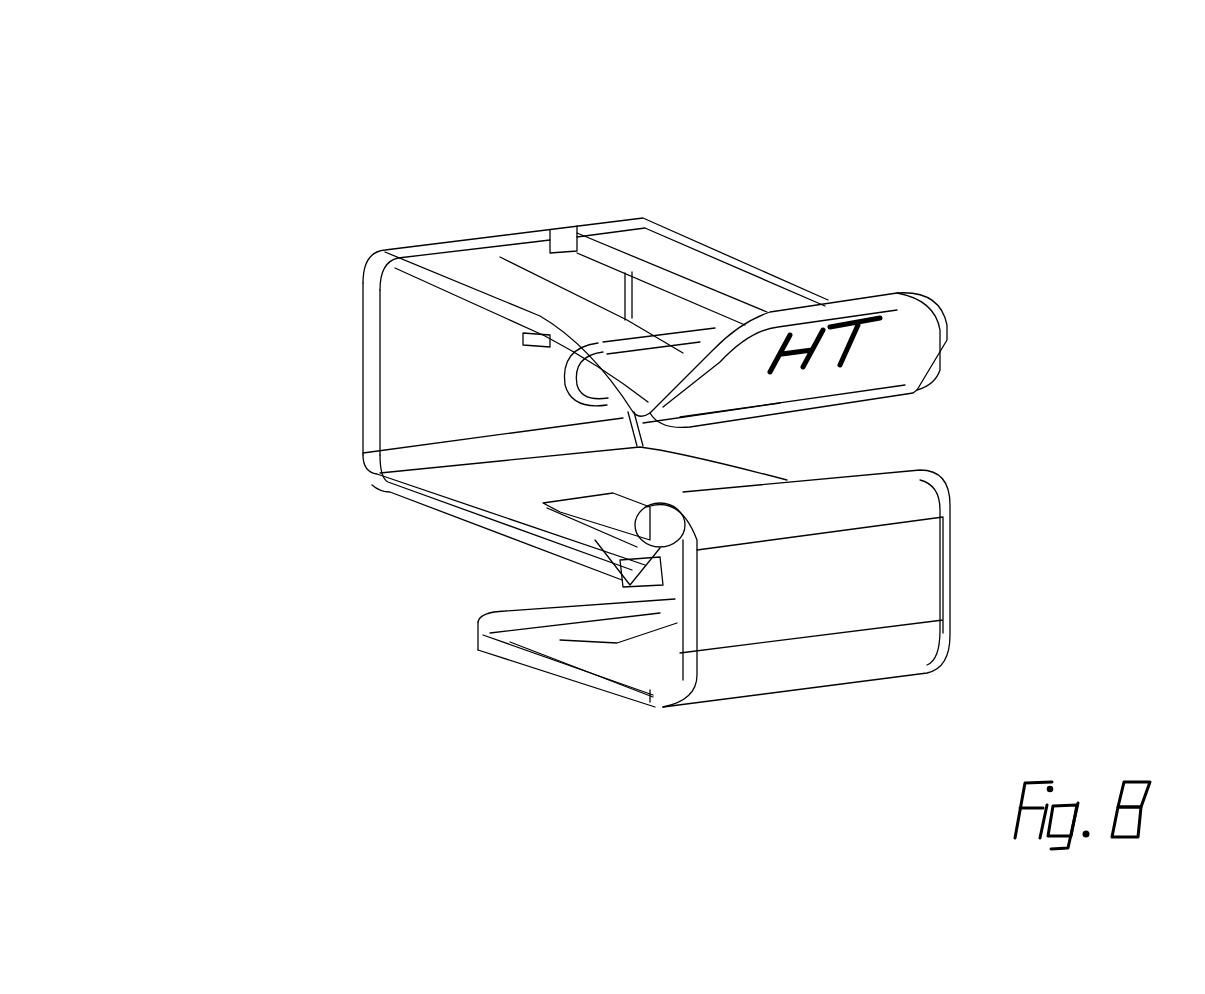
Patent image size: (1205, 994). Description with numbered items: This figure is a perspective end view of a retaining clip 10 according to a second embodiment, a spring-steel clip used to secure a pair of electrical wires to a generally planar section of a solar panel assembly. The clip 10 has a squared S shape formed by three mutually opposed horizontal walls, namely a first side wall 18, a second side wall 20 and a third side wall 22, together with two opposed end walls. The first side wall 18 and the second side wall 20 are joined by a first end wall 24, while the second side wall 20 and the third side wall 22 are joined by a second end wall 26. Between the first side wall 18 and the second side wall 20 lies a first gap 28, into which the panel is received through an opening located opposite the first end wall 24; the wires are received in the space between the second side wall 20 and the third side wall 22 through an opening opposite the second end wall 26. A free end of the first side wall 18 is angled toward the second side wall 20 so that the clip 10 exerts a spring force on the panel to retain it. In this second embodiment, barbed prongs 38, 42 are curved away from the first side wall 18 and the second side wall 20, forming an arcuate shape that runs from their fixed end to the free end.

The retaining clip 10 is at (721, 128).
The first side wall 18 is at (597, 680).
The second side wall 20 is at (457, 468).
The third side wall 22 is at (662, 240).
The first end wall 24 is at (870, 555).
The second end wall 26 is at (390, 349).
The first gap 28 is at (472, 588).
The barbed prong 38 is at (617, 630).
The barbed prong 42 is at (607, 563).